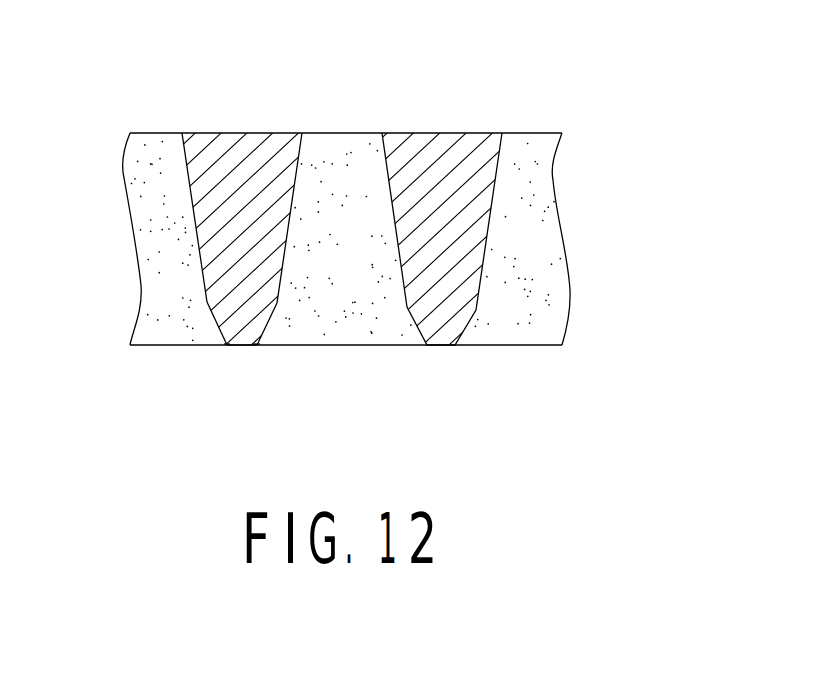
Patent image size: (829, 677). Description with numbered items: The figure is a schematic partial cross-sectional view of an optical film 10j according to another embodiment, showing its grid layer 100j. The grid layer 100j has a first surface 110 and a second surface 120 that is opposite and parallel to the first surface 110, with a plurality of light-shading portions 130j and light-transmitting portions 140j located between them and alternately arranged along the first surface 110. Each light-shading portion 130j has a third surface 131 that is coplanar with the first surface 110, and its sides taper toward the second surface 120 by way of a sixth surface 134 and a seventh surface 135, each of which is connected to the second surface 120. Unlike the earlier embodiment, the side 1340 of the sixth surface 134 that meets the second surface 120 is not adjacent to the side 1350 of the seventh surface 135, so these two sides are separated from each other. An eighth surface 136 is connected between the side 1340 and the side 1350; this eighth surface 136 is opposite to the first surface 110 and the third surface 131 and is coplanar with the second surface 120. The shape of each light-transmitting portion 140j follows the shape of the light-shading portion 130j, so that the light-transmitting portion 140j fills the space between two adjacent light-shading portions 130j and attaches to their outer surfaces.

The optical film 10j is at (82, 33).
The grid layer 100j is at (157, 133).
The first surface 110 is at (545, 126).
The second surface 120 is at (548, 346).
The light-shading portion 130j is at (457, 215).
The light-transmitting portion 140j is at (513, 278).
The third surface 131 is at (252, 132).
The sixth surface 134 is at (209, 315).
The seventh surface 135 is at (272, 315).
The eighth surface 136 is at (251, 344).
The side of the sixth surface 1340 is at (227, 345).
The side of the seventh surface 1350 is at (257, 345).